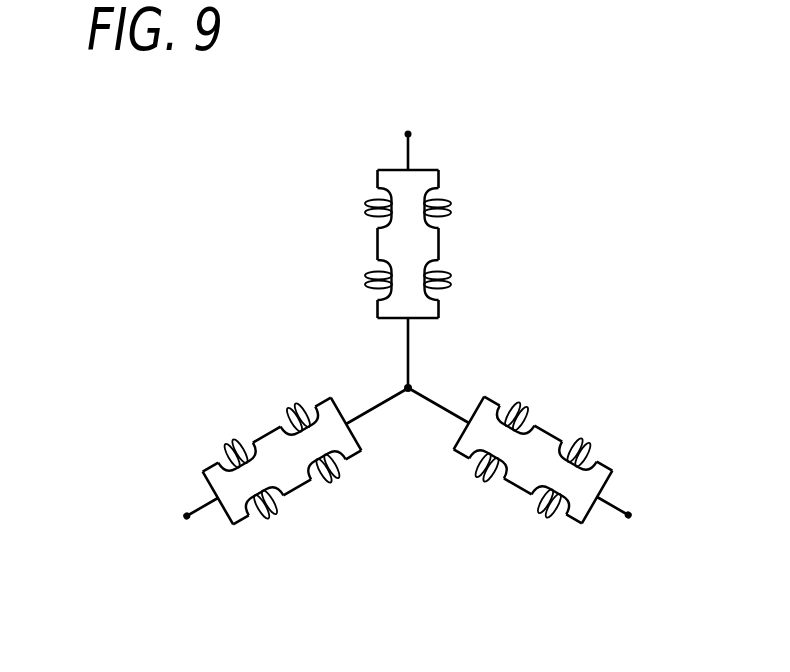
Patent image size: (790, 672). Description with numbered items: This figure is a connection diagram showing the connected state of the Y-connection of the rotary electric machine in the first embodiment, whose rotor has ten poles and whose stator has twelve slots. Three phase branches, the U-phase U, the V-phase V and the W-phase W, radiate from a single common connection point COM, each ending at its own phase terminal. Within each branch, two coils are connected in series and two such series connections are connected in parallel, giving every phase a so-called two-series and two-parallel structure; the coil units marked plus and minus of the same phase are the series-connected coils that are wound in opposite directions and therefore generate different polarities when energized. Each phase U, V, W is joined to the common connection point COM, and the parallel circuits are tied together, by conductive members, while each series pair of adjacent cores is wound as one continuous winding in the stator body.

The U-phase U is at (409, 242).
The V-phase V is at (294, 453).
The W-phase W is at (523, 452).
The common connection point COM is at (408, 415).